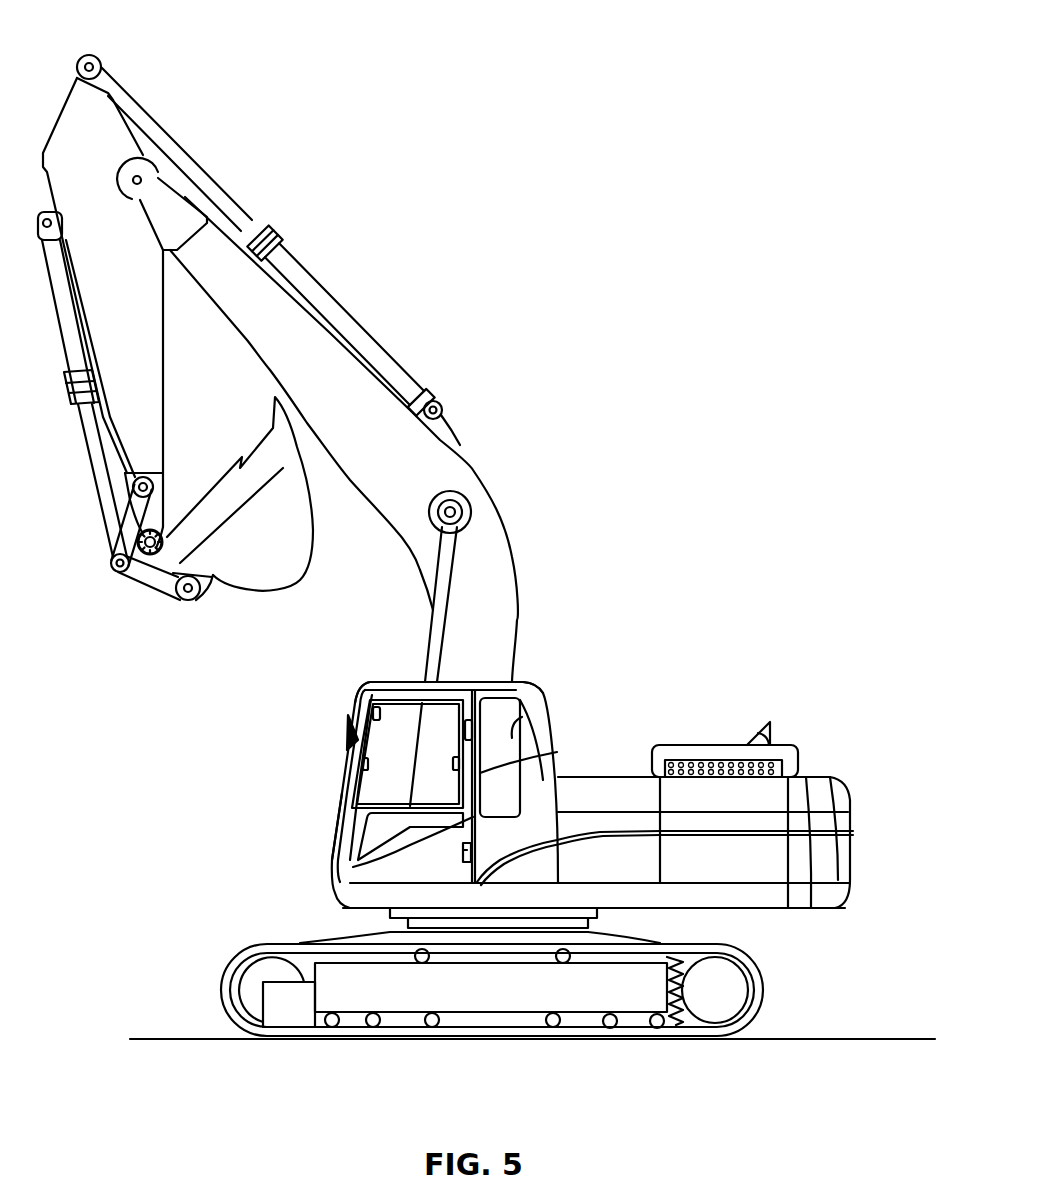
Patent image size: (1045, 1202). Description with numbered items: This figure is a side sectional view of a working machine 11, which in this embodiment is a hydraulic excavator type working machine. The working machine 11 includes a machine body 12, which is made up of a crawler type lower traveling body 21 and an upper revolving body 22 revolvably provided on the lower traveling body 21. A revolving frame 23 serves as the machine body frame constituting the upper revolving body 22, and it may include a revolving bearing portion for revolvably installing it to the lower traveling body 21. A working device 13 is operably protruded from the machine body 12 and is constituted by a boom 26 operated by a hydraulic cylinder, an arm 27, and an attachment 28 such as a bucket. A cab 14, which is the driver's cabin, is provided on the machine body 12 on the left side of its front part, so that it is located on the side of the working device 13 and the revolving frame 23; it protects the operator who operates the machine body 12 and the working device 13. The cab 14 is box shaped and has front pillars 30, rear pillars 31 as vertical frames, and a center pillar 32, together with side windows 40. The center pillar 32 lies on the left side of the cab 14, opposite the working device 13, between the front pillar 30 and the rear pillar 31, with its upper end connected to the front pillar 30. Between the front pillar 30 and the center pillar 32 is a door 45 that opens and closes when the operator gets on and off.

The working machine 11 is at (665, 622).
The machine body 12 is at (322, 877).
The working device 13 is at (490, 454).
The cab 14 is at (543, 680).
The lower traveling body 21 is at (765, 995).
The upper revolving body 22 is at (737, 910).
The revolving frame 23 is at (368, 902).
The boom 26 is at (516, 548).
The arm 27 is at (163, 345).
The attachment 28 is at (213, 498).
The front pillar 30 is at (340, 753).
The rear pillar 31 is at (555, 730).
The center pillar 32 is at (550, 756).
The side window 40 is at (357, 692).
The door 45 is at (332, 815).